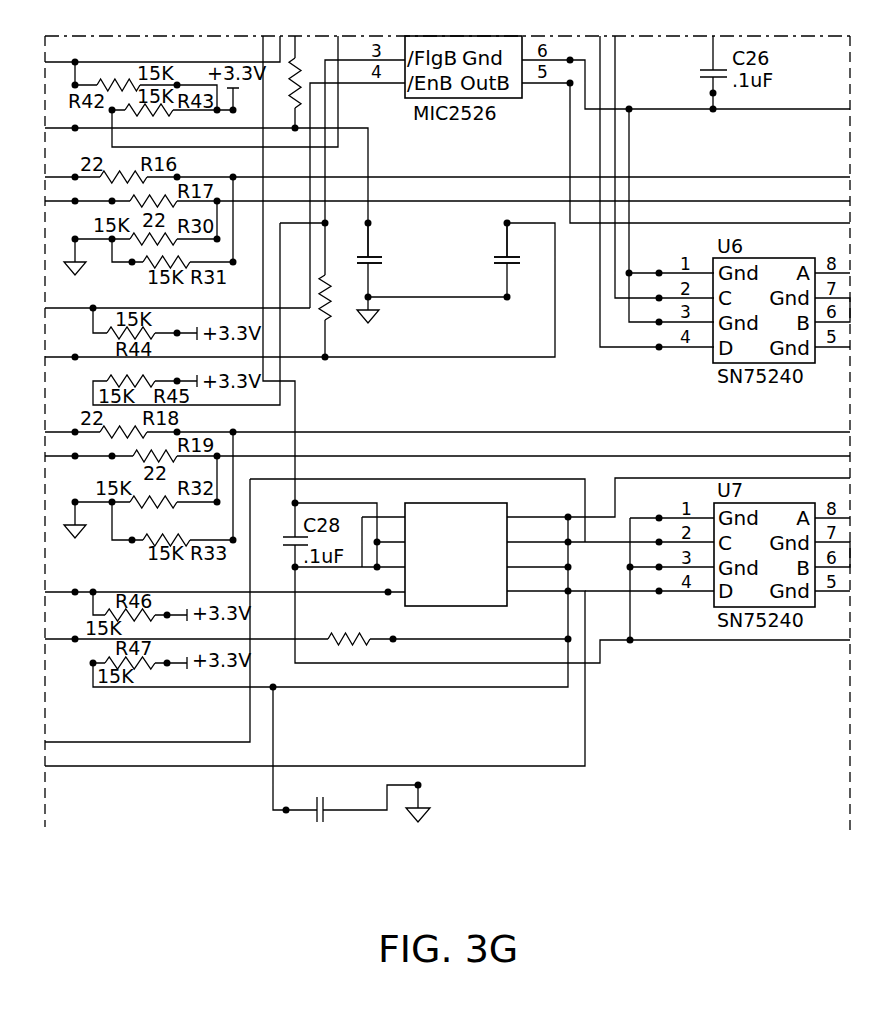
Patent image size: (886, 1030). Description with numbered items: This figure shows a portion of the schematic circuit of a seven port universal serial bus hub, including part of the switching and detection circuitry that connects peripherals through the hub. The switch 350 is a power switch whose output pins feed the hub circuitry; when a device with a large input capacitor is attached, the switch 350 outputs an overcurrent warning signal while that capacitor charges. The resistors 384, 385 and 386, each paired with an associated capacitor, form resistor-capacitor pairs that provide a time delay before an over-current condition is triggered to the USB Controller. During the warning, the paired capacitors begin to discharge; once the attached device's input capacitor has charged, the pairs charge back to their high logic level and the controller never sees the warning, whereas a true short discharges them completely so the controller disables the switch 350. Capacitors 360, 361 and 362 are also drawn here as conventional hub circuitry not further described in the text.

The switch 350 is at (507, 598).
The capacitor C60 360 is at (376, 257).
The capacitor C61 361 is at (499, 257).
The capacitor C62 362 is at (317, 815).
The resistor 384 is at (300, 92).
The resistor 385 is at (327, 315).
The resistor 386 is at (360, 643).